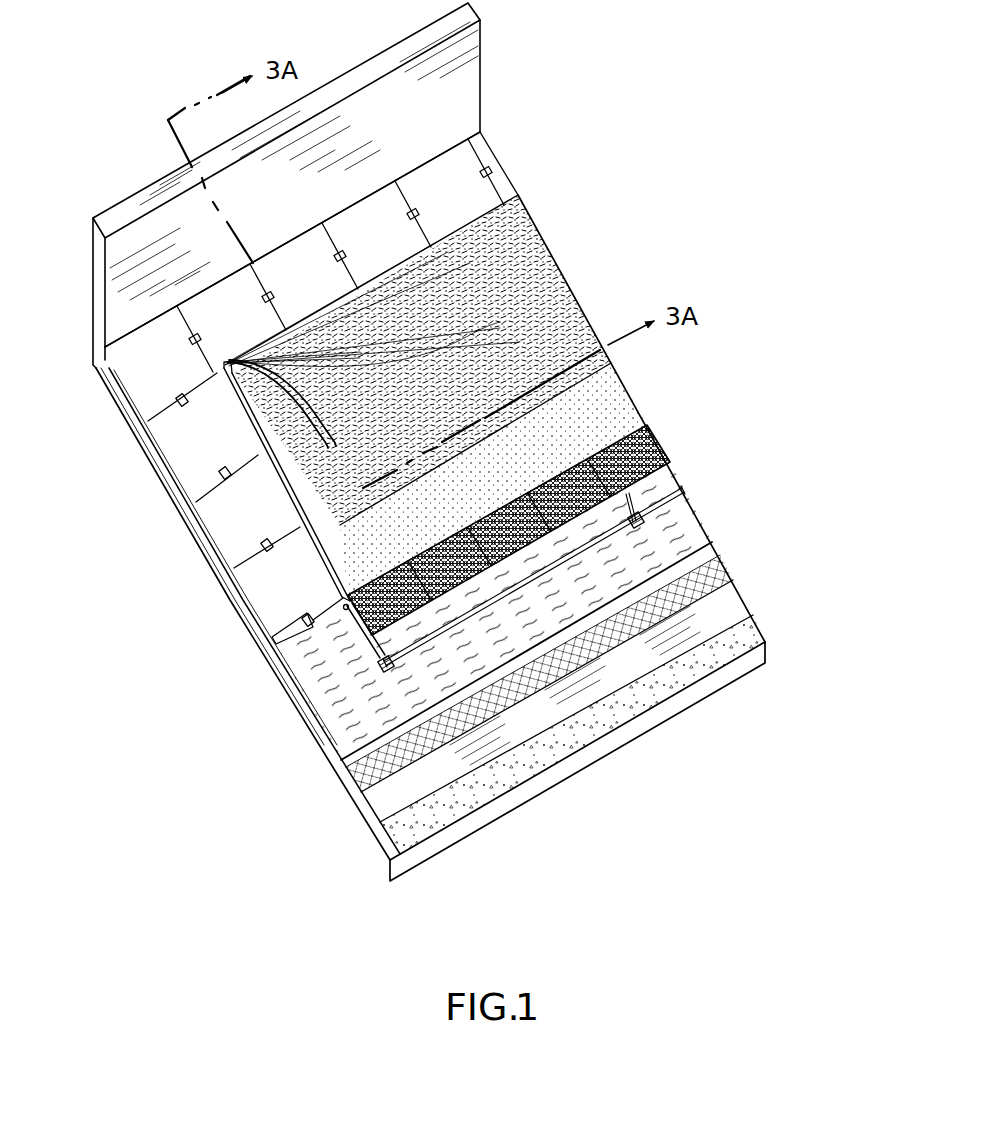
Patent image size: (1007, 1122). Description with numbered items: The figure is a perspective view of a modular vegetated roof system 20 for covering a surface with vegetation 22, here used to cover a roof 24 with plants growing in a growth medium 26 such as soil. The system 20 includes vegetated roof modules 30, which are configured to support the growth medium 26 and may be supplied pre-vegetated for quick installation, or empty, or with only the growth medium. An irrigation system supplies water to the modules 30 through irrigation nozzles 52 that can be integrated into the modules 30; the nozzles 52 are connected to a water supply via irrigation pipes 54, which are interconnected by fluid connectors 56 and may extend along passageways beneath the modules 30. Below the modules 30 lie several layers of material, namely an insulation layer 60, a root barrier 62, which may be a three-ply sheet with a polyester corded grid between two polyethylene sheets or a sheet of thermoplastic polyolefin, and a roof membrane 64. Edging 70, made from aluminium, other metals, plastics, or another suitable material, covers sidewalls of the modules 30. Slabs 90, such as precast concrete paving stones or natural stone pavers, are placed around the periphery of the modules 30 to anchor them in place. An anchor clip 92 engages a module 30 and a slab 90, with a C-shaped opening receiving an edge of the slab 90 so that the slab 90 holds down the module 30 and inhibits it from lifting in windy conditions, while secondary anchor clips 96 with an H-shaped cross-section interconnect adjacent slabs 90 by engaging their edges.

The modular vegetated roof system 20 is at (595, 158).
The vegetation 22 is at (543, 257).
The roof 24 is at (743, 632).
The growth medium 26 is at (607, 402).
The vegetated roof module 30 is at (665, 482).
The irrigation nozzle 52 is at (224, 362).
The irrigation pipe 54 is at (683, 490).
The fluid connector 56 is at (632, 530).
The insulation layer 60 is at (697, 530).
The root barrier 62 is at (713, 563).
The roof membrane 64 is at (730, 593).
The edging 70 is at (240, 412).
The slab 90 is at (208, 500).
The anchor clip 92 is at (268, 622).
The secondary anchor clip 96 is at (262, 541).